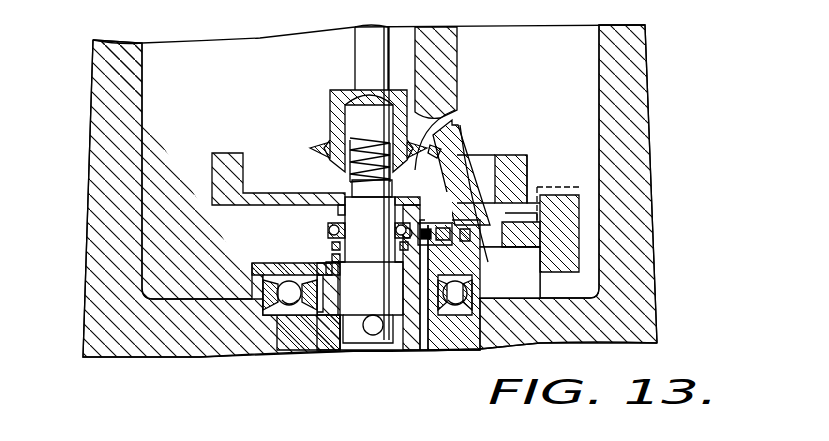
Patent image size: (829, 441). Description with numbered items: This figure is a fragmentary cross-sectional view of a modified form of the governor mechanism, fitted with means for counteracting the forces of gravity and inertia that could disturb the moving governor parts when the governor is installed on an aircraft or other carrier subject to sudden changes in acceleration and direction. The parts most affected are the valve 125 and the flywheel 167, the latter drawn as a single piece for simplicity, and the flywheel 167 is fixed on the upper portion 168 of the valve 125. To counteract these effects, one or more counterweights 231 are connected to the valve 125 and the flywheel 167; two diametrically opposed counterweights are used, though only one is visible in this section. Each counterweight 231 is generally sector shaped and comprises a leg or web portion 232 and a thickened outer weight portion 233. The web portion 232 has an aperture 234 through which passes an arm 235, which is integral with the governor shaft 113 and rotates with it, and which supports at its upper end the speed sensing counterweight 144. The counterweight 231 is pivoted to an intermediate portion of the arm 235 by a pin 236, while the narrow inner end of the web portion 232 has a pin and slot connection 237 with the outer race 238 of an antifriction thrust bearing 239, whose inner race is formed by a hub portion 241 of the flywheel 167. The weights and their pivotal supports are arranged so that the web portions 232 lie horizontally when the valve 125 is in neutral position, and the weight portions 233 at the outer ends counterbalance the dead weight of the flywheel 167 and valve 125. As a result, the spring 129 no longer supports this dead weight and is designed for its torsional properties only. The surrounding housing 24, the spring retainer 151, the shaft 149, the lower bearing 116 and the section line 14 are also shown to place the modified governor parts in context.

The housing body 24 is at (635, 120).
The speed sensing counterweight 144 is at (440, 67).
The shaft 149 is at (360, 58).
The spring 151 is at (359, 152).
The flywheel 167 is at (218, 156).
The upper portion of valve 168 is at (370, 270).
The governor shaft 113 is at (425, 343).
The bearing 116 is at (290, 290).
The weight portion 233 is at (485, 292).
The web portion 232 is at (505, 252).
The counterweight 231 is at (553, 268).
The pin 236 is at (512, 160).
The aperture 234 is at (525, 190).
The arm 235 is at (470, 170).
The pin and slot connection 237 is at (445, 150).
The antifriction thrust bearing 239 is at (328, 231).
The outer race 238 is at (334, 243).
The hub portion 241 is at (336, 212).
The spring 129 is at (330, 259).
The valve 125 is at (350, 293).
The section line 14- 14 is at (243, 219).